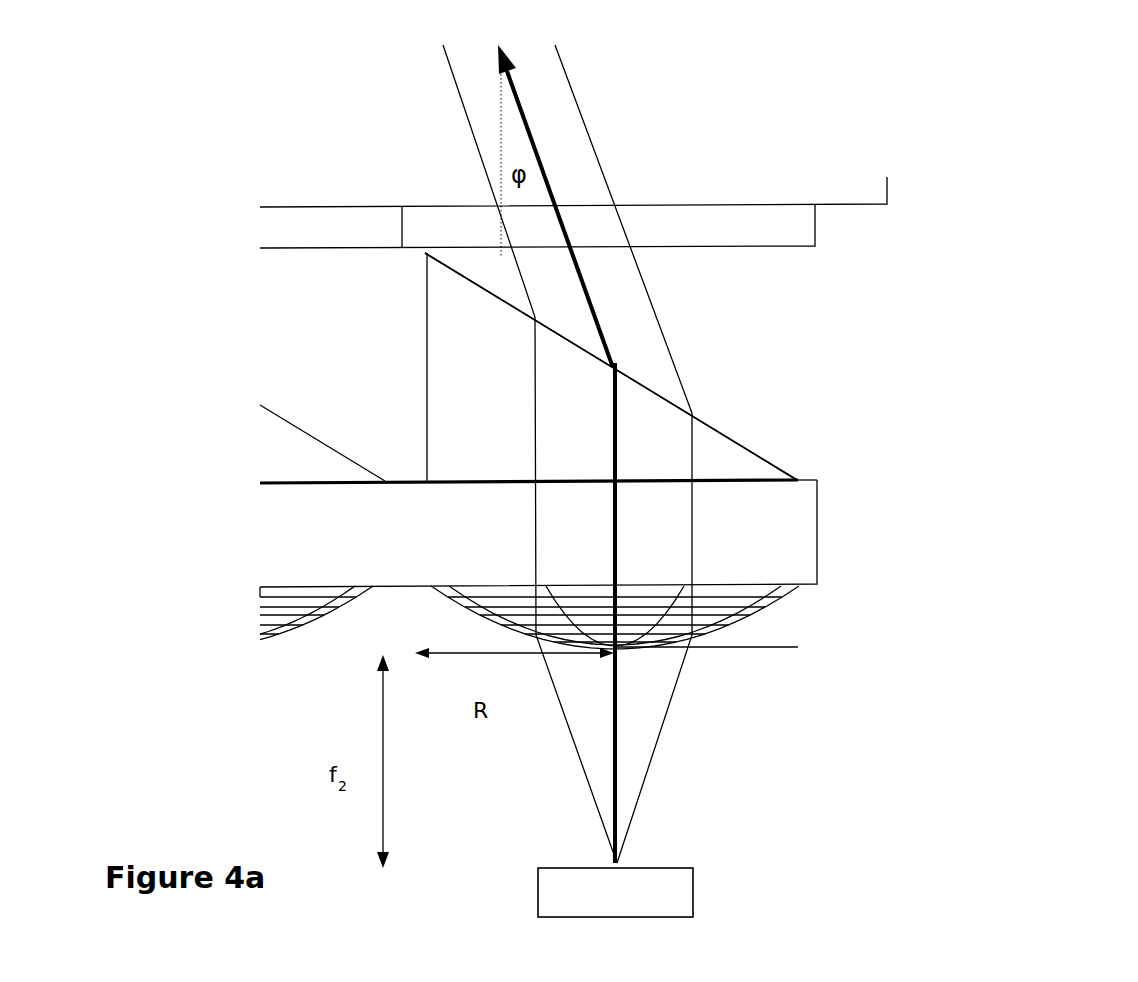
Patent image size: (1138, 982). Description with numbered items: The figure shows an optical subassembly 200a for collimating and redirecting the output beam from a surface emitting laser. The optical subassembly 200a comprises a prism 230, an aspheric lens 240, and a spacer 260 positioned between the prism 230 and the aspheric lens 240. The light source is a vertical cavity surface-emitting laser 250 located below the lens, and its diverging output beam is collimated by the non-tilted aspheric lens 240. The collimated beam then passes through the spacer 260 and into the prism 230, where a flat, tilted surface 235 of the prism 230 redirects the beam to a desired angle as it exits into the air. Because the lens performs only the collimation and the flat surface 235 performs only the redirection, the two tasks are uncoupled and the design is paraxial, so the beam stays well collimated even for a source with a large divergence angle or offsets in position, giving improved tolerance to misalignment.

The optical subassembly 200a is at (685, 413).
The prism 230 is at (745, 462).
The flat tilted surface 235 is at (712, 423).
The aspheric lens 240 is at (760, 603).
The vertical cavity surface-emitting laser (VCSEL) 250 is at (615, 892).
The spacer 260 is at (790, 550).